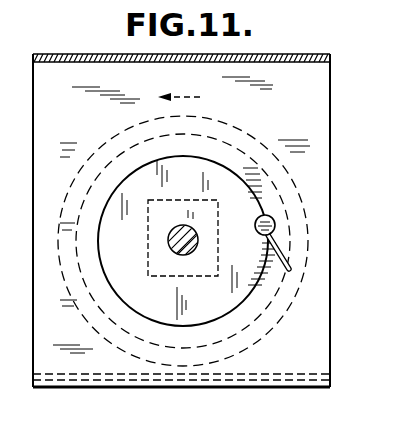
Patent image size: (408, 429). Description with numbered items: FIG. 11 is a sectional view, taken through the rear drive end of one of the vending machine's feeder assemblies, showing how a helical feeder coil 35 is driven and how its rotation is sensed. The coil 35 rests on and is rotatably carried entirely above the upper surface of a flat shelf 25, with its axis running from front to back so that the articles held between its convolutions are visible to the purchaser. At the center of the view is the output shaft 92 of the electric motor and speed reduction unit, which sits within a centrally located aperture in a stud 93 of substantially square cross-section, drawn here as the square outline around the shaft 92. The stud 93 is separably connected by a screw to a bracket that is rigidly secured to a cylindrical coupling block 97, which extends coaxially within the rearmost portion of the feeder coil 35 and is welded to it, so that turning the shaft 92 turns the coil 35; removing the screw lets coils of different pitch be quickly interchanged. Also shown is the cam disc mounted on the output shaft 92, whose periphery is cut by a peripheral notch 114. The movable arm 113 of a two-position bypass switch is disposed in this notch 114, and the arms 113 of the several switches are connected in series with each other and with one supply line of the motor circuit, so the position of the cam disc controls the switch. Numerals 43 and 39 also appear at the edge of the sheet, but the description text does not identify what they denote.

The flat shelf 25 is at (310, 383).
The helical feeder coil 35 is at (107, 145).
The cylindrical coupling block 97 is at (242, 155).
The output shaft 92 is at (168, 240).
The stud 93 is at (148, 263).
The movable switch arm 113 is at (265, 247).
The peripheral notch 114 is at (260, 212).
The element 43 is at (297, 0).
The element 39 is at (300, 2).